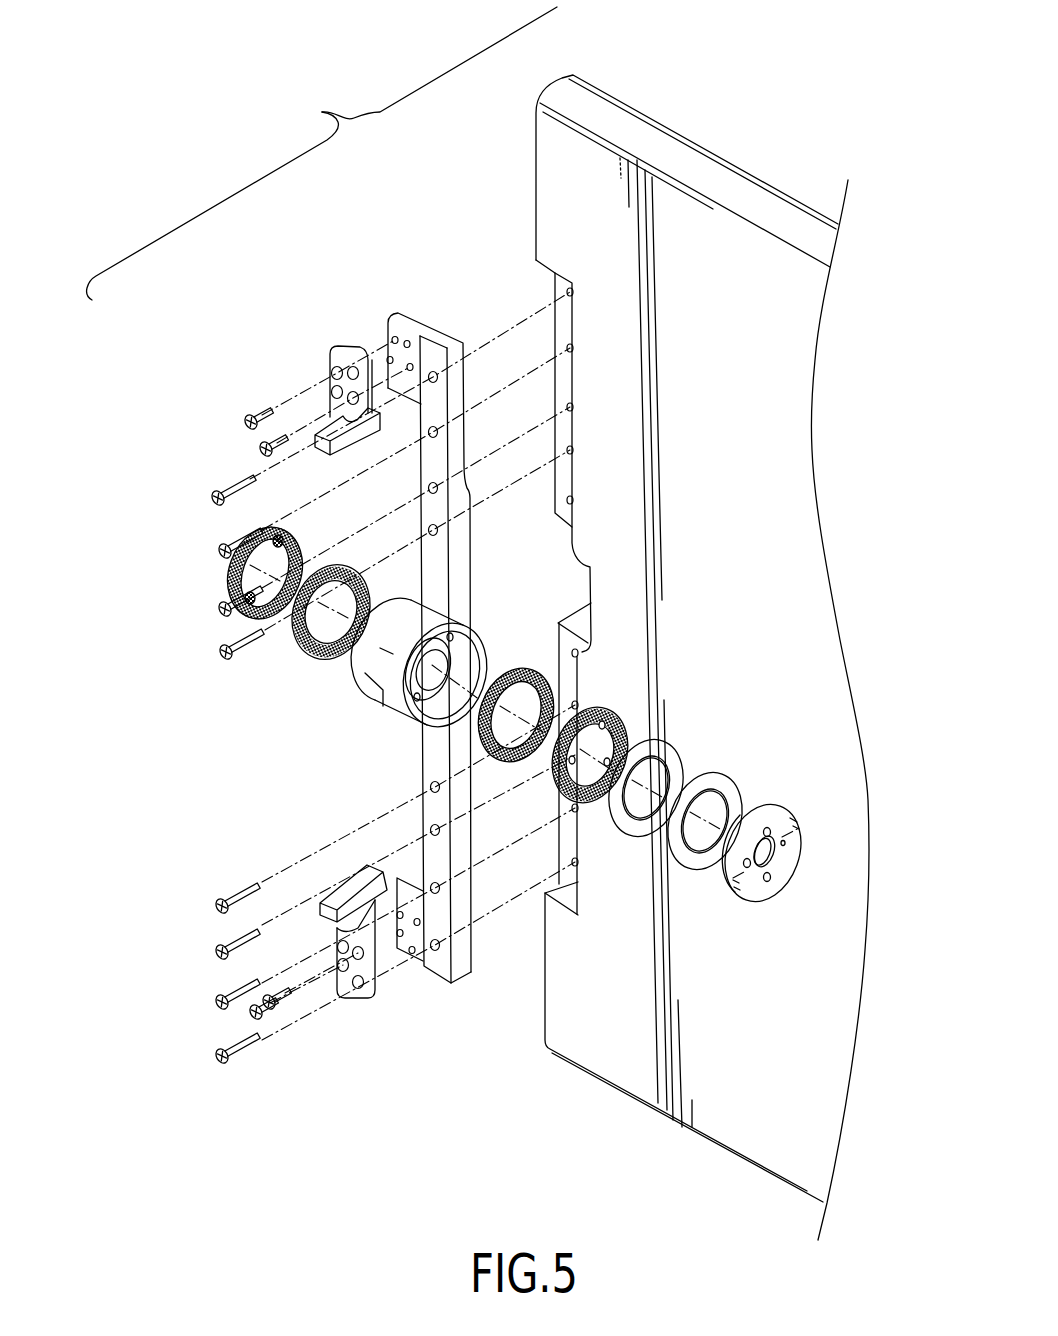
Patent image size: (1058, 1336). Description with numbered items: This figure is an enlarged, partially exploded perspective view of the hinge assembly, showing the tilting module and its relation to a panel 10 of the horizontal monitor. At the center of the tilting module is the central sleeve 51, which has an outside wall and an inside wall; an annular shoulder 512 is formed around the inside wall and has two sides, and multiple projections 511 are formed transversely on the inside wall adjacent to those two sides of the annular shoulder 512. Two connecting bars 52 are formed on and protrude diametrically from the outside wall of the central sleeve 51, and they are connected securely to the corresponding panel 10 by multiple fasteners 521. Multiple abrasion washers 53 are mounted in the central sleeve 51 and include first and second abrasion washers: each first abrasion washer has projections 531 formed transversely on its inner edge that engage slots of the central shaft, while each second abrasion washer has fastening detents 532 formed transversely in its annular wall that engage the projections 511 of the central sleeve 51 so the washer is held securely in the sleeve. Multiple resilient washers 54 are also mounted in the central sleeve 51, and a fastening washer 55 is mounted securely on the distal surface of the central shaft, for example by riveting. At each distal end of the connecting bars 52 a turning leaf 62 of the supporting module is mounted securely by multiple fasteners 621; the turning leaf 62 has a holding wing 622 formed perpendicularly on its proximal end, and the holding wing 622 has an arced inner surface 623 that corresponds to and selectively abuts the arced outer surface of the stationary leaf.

The panel 10 is at (718, 167).
The central sleeve 51 is at (434, 677).
The projections 511 is at (453, 636).
The annular shoulder 512 is at (447, 656).
The connecting bars 52 is at (433, 333).
The fasteners 521 is at (218, 500).
The abrasion washers 53 is at (425, 657).
The projections 531 is at (296, 541).
The fastening detents 532 is at (300, 633).
The resilient washers 54 is at (723, 780).
The fastening washer 55 is at (797, 818).
The turning leaf 62 is at (327, 649).
The fasteners 621 is at (257, 414).
The holding wing 622 is at (260, 455).
The arced inner surface 623 is at (345, 450).